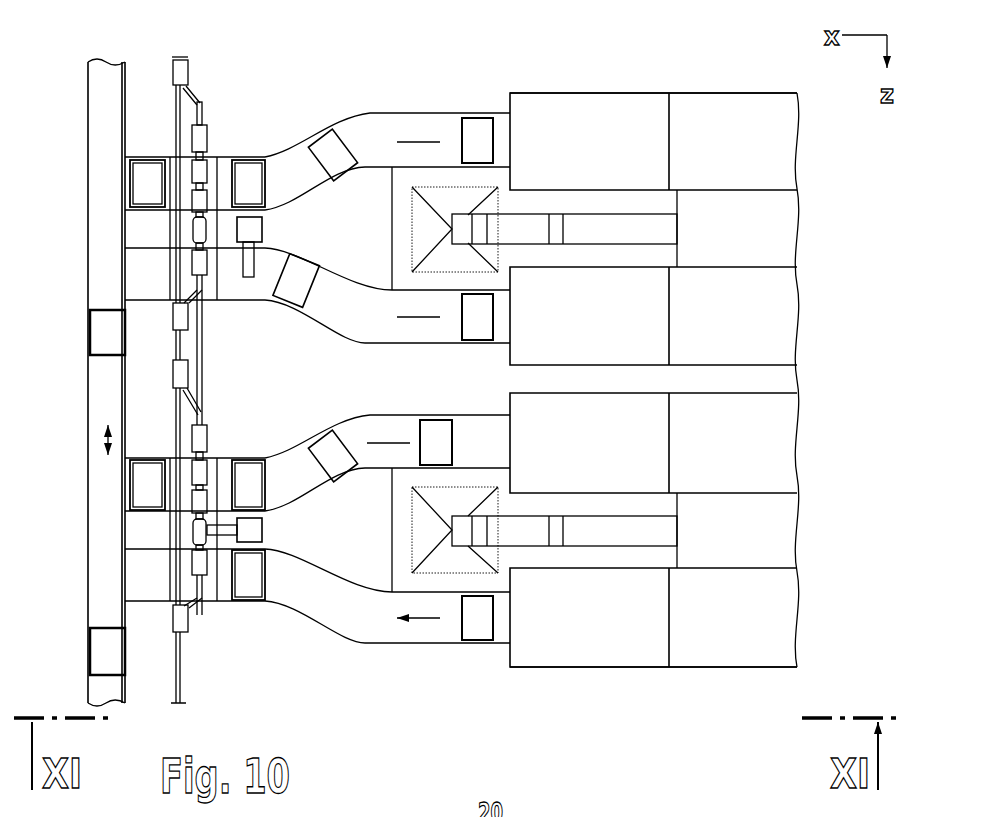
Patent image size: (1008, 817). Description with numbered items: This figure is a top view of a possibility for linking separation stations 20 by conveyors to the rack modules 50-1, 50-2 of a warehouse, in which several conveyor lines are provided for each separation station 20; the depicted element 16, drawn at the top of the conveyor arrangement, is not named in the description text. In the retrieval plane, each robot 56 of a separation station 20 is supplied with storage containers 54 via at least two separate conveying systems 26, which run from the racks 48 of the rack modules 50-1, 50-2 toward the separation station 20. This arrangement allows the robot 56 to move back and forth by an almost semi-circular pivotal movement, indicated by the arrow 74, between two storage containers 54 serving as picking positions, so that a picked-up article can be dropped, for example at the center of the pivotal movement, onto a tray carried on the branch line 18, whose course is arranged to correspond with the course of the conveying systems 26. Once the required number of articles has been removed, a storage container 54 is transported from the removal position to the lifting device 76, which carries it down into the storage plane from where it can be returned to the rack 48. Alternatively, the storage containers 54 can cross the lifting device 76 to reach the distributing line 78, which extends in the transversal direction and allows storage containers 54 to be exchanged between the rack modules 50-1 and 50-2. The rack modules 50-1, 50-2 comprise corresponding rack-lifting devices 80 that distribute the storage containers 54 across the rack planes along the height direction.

The sensor 16 is at (177, 57).
The branch line 18 is at (201, 94).
The separation station 20 is at (244, 457).
The conveying system 26 is at (389, 112).
The rack 48 is at (748, 157).
The rack module 50-1 is at (802, 229).
The rack module 50-2 is at (802, 530).
The storage container 54 is at (148, 172).
The robot 56 is at (265, 229).
The arrow 74 is at (197, 226).
The lifting device 76 is at (213, 153).
The distributing line 78 is at (86, 437).
The rack-lifting device 80 is at (729, 92).